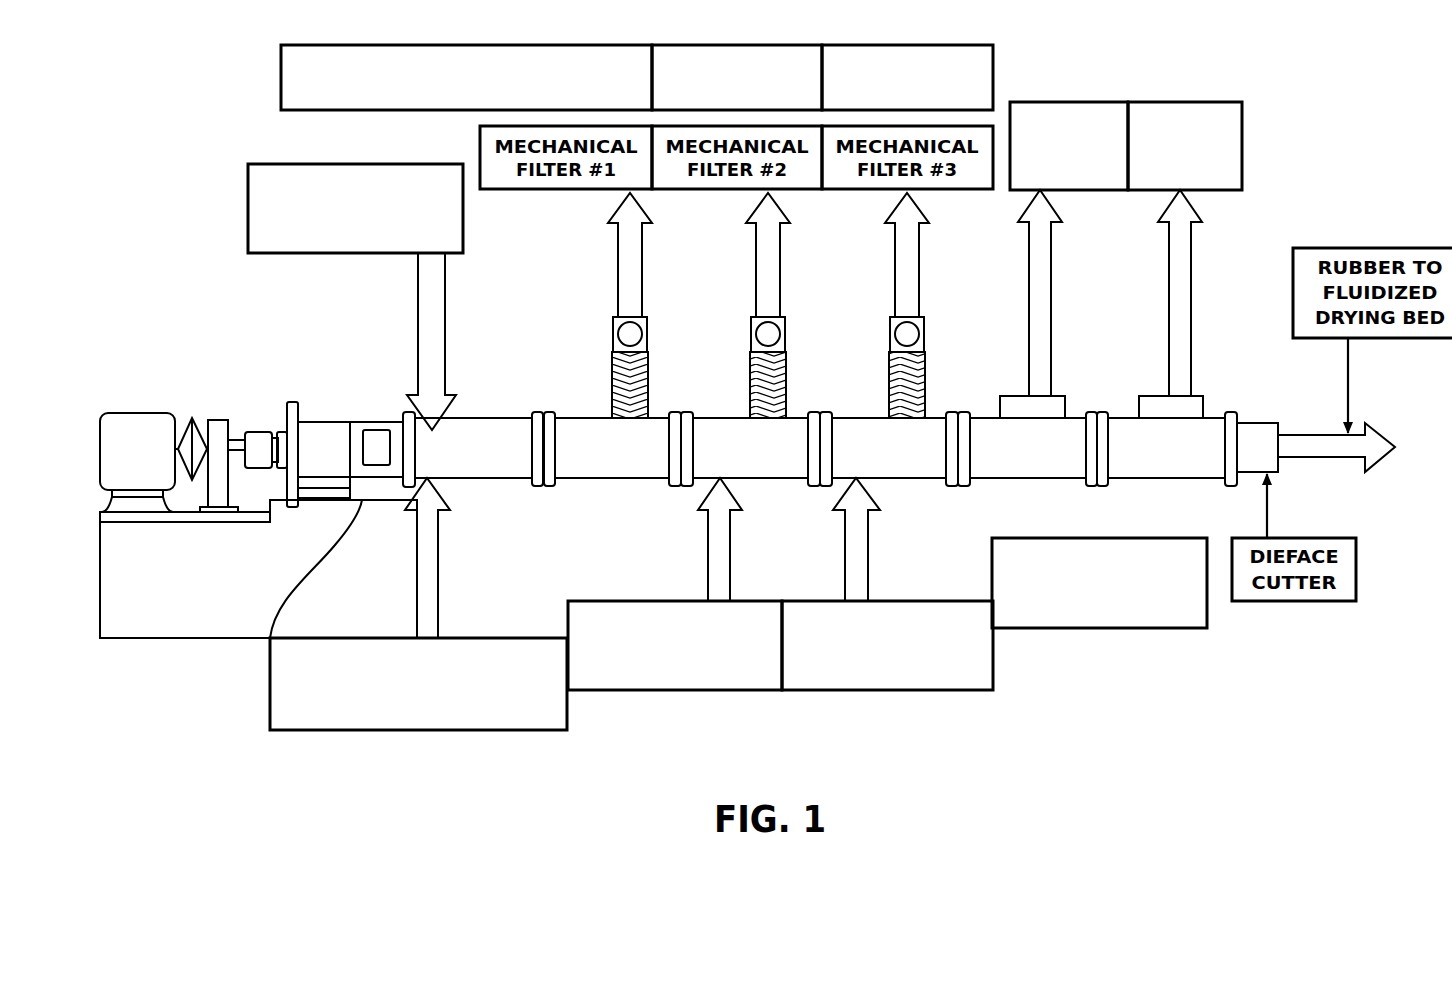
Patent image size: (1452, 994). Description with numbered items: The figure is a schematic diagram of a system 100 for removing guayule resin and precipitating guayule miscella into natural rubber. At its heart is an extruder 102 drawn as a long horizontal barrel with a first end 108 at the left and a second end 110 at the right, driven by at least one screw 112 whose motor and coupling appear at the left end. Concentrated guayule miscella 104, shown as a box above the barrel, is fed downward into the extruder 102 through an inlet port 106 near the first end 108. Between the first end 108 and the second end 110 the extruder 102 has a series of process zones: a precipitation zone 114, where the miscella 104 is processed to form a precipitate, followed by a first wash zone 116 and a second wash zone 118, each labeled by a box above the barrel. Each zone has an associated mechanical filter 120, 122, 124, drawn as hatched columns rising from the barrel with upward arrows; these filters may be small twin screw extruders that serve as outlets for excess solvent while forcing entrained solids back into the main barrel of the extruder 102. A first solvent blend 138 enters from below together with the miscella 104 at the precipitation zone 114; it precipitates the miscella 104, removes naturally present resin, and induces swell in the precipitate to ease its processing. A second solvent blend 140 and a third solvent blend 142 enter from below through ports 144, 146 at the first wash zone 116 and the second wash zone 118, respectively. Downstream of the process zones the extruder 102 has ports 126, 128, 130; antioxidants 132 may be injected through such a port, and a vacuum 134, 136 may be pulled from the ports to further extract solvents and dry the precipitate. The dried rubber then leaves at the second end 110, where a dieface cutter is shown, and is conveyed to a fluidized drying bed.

The system 100 is at (773, 372).
The extruder 102 is at (846, 485).
The guayule miscella 104 is at (355, 208).
The inlet port 106 is at (460, 341).
The first end 108 is at (323, 399).
The second end 110 is at (1362, 508).
The screw 112 is at (189, 399).
The precipitation zone 114 is at (466, 77).
The first wash zone 116 is at (737, 77).
The second wash zone 118 is at (907, 77).
The filter 120 is at (656, 305).
The filter 122 is at (798, 305).
The filter 124 is at (939, 305).
The port 126 is at (1039, 470).
The port 128 is at (1066, 304).
The port 130 is at (1208, 304).
The antioxidants 132 is at (1099, 583).
The vacuum 134 is at (1069, 146).
The vacuum 136 is at (1185, 146).
The first solvent blend 138 is at (418, 604).
The second solvent blend 140 is at (675, 645).
The third solvent blend 142 is at (887, 645).
The port 144 is at (744, 539).
The port 146 is at (886, 539).